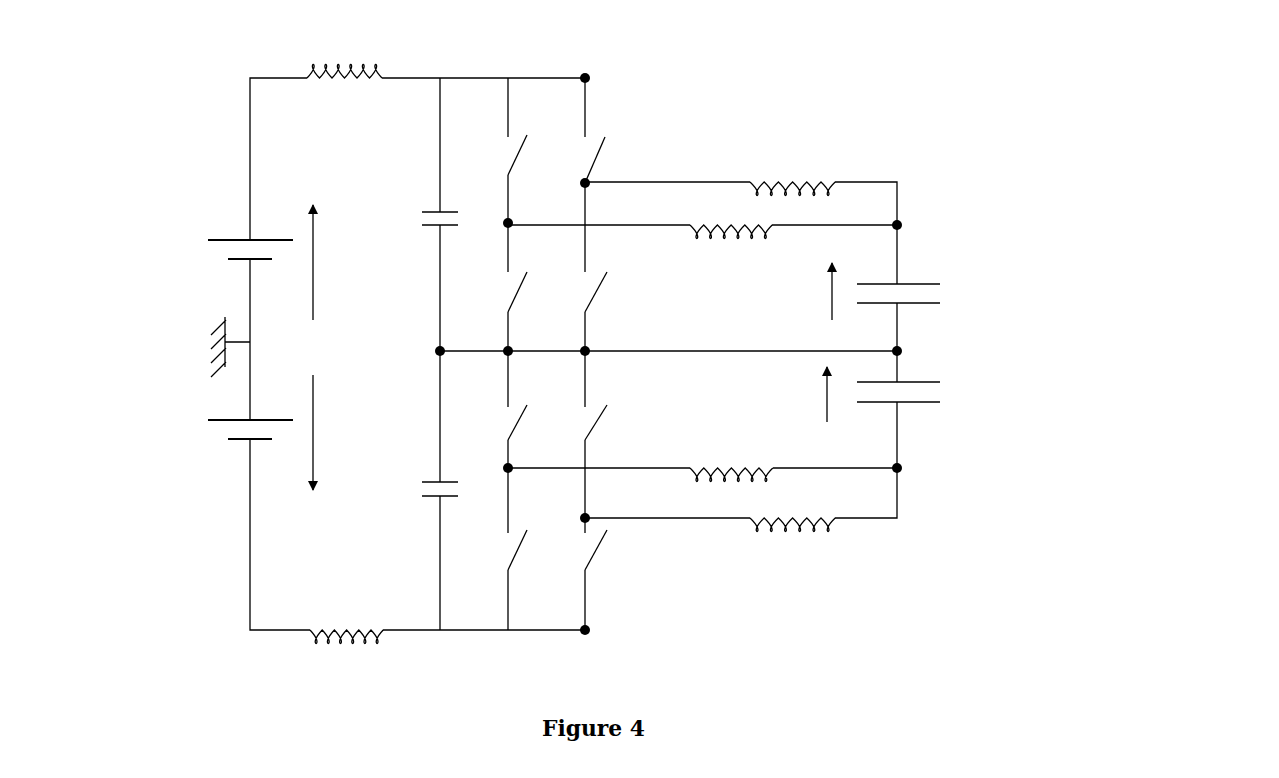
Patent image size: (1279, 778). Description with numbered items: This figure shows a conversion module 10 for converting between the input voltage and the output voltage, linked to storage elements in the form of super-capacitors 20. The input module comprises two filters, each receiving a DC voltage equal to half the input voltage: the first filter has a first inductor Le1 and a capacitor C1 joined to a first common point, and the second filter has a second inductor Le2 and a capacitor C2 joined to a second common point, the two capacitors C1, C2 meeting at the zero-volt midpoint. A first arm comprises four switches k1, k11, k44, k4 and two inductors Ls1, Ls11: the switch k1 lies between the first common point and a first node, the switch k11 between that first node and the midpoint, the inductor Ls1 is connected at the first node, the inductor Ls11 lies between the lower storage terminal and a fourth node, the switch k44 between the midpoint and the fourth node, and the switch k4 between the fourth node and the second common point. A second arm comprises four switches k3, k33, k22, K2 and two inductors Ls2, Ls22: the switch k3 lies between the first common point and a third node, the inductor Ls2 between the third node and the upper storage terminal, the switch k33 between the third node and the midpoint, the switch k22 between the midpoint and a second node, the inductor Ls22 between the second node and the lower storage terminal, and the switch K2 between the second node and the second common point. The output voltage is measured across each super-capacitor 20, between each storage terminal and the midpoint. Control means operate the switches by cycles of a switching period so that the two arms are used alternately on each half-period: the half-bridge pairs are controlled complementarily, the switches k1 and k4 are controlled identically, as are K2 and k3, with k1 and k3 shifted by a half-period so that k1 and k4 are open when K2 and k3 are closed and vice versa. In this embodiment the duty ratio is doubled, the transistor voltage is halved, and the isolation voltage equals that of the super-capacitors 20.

The conversion module 10 is at (1102, 117).
The super-capacitors 20 is at (937, 278).
The first inductor Le1 is at (344, 89).
The second inductor Le2 is at (346, 608).
The capacitor C1 is at (418, 219).
The capacitor C2 is at (418, 489).
The inductor Ls1 is at (730, 242).
The inductor Ls2 is at (792, 166).
The inductor Ls11 is at (792, 538).
The inductor Ls22 is at (731, 454).
The switch k1 is at (528, 155).
The switch k3 is at (606, 160).
The switch k11 is at (531, 292).
The switch k33 is at (609, 292).
The switch k22 is at (531, 426).
The switch k44 is at (609, 426).
The switch K2 is at (528, 556).
The switch k4 is at (606, 556).